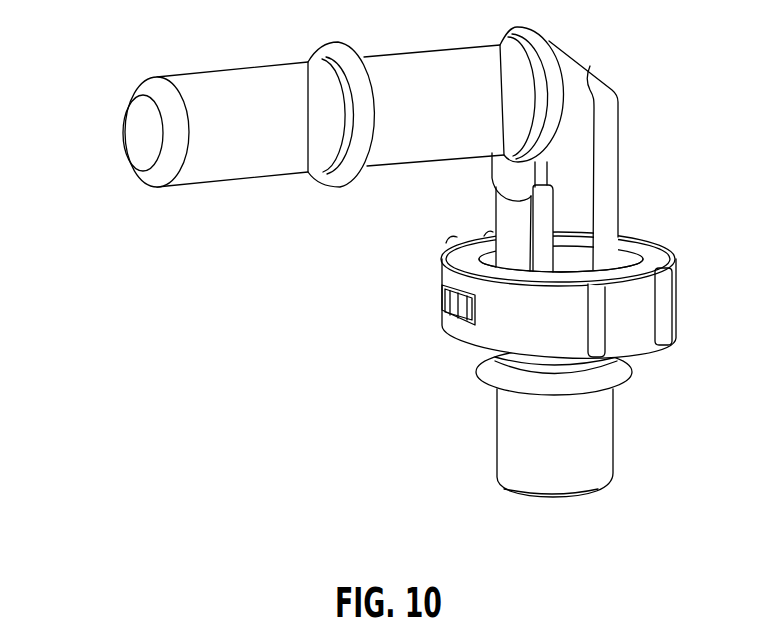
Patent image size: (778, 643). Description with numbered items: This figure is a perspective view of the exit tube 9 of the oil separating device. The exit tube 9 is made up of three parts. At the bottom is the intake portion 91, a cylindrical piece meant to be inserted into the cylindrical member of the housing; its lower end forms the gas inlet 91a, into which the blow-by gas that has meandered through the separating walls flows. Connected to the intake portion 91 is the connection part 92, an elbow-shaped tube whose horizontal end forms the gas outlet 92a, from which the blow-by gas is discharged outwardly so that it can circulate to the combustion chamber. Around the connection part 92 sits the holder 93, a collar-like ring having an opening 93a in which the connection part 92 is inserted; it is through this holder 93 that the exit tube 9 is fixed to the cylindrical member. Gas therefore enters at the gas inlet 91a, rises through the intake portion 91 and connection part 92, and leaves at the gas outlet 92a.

The exit tube 9 is at (660, 76).
The intake portion 91 is at (613, 455).
The gas inlet 91a is at (568, 498).
The connection part 92 is at (558, 62).
The gas outlet 92a is at (130, 130).
The holder 93 is at (635, 323).
The opening 93a is at (620, 257).